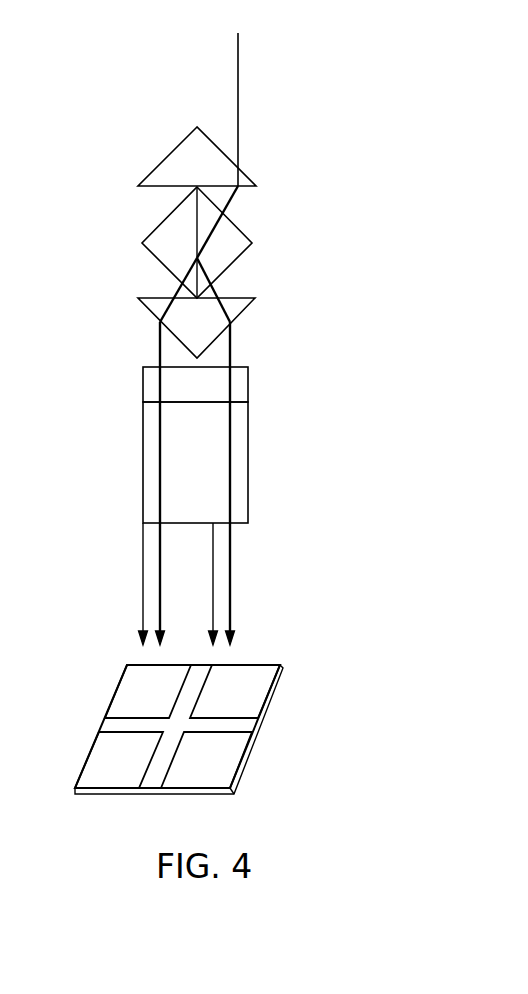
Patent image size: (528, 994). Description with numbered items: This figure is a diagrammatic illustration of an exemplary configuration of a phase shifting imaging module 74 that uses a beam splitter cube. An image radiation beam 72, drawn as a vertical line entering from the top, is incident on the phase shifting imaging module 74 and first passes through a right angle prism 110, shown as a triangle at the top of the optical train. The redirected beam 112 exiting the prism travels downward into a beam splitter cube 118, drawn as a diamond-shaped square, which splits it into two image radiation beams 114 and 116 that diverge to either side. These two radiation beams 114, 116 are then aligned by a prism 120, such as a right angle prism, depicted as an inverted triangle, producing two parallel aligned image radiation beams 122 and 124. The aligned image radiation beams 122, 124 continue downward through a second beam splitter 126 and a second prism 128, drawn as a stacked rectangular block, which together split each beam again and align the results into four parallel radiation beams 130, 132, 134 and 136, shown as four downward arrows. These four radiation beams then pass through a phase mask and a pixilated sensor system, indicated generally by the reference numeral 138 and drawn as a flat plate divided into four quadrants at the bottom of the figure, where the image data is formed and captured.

The phase shifting imaging module 74 is at (387, 80).
The image radiation beam 72 is at (239, 81).
The right angle prism 110 is at (251, 180).
The redirected beam 112 is at (236, 197).
The image radiation beam 114 is at (217, 288).
The image radiation beam 116 is at (178, 288).
The beam splitter cube 118 is at (253, 243).
The prism 120 is at (250, 303).
The aligned image radiation beam 122 is at (232, 350).
The aligned image radiation beam 124 is at (160, 350).
The second beam splitter 126 is at (249, 385).
The second prism 128 is at (249, 460).
The radiation beam 130 is at (232, 551).
The radiation beam 132 is at (214, 587).
The radiation beam 134 is at (143, 552).
The radiation beam 136 is at (160, 588).
The phase mask and pixilated sensor system 138 is at (259, 720).